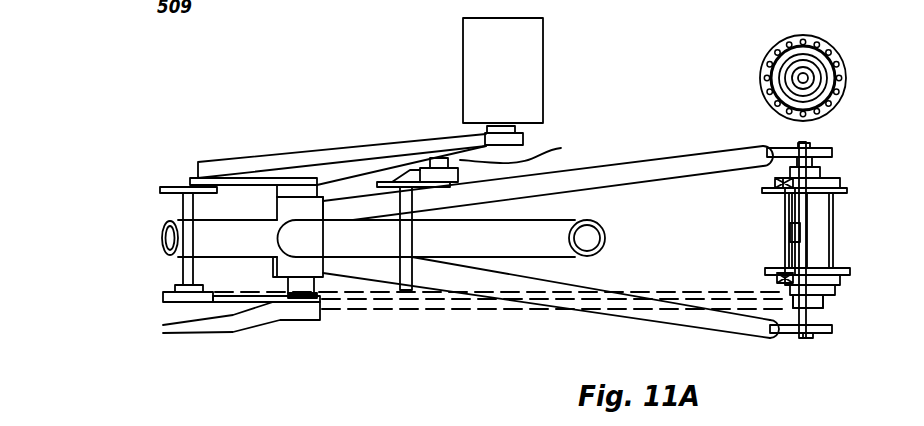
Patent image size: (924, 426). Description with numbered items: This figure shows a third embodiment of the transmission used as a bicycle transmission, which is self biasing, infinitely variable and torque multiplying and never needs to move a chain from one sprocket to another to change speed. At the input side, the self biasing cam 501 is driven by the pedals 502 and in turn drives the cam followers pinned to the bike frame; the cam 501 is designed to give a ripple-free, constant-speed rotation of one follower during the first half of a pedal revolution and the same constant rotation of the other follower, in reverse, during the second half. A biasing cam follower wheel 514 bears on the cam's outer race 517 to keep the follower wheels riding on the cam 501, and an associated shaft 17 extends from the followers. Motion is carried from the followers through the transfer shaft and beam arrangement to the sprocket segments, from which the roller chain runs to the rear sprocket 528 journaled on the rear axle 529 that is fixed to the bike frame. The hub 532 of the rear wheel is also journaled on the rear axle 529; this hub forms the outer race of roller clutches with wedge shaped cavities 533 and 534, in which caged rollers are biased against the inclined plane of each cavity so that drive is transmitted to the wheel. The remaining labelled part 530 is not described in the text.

The rod 17 is at (413, 168).
The self biasing cam 501 is at (200, 162).
The pedals 502 is at (462, 78).
The biasing cam follower wheel 514 is at (530, 148).
The cam outer race 517 is at (249, 178).
The rear sprocket 528 is at (840, 292).
The rear axle 529 is at (808, 337).
The flange 530 is at (826, 292).
The hub 532 is at (823, 238).
The wedge shaped cavity 533 is at (790, 75).
The wedge shaped cavity 534 is at (183, 273).